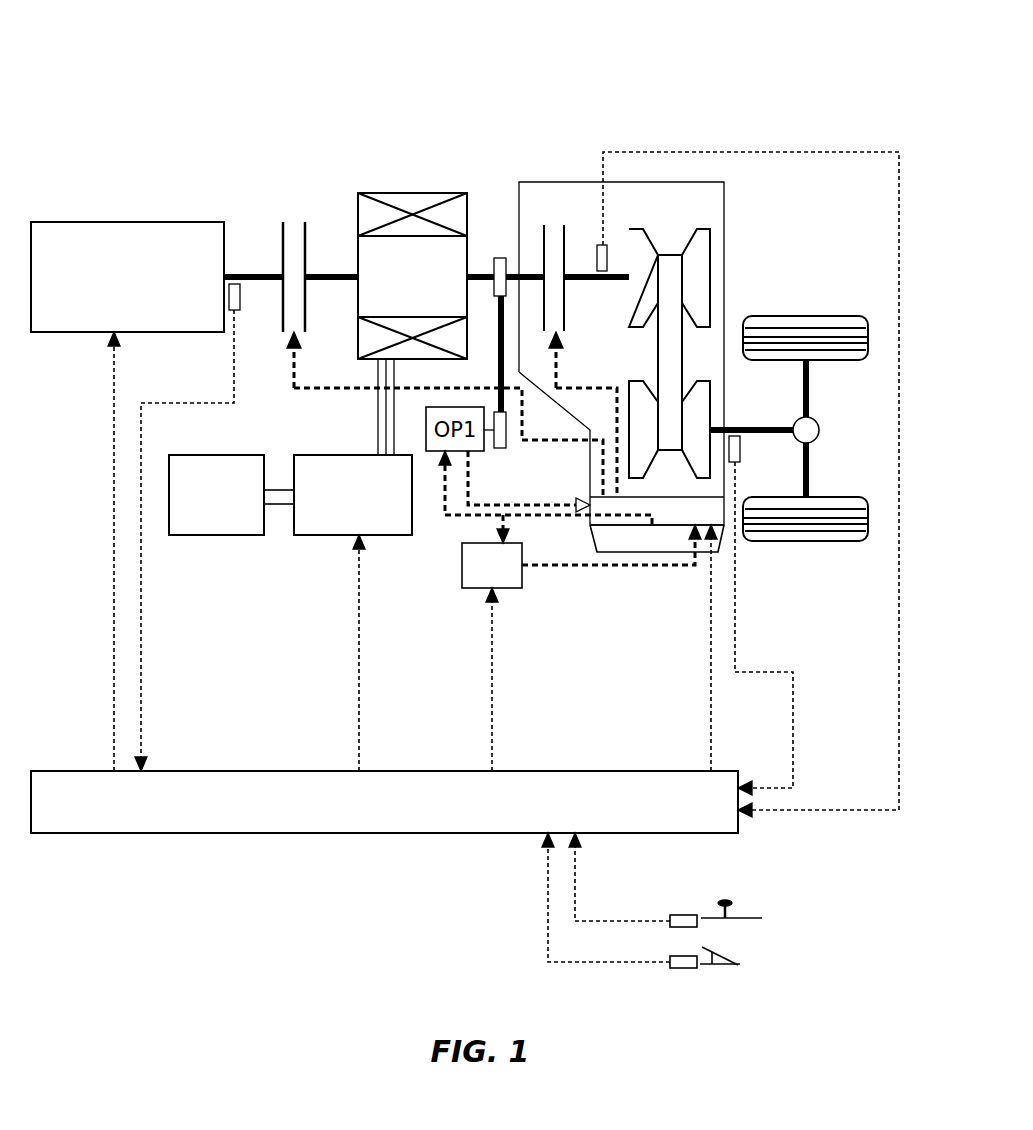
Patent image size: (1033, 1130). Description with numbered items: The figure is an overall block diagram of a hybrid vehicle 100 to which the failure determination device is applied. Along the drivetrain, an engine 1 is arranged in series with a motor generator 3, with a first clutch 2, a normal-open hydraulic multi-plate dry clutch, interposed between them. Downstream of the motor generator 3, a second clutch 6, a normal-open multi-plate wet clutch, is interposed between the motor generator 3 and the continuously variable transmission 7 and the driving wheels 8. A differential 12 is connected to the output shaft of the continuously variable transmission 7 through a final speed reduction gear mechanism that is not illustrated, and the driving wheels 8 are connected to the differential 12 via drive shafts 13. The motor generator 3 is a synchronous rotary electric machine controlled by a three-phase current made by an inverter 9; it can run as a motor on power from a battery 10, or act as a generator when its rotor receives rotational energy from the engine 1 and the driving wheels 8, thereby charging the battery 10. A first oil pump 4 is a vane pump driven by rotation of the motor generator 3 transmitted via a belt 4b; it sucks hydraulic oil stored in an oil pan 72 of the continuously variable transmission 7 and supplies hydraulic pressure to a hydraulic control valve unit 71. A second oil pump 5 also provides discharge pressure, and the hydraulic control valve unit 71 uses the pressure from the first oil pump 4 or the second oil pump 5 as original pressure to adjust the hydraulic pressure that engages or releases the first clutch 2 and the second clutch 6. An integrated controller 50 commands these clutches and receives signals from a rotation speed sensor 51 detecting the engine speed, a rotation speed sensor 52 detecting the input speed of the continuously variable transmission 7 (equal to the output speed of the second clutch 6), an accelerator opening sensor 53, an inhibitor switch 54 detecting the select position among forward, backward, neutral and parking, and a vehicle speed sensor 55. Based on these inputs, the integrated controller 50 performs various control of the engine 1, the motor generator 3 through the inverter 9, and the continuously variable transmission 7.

The hybrid vehicle 100 is at (675, 71).
The engine 1 is at (165, 237).
The first clutch 2 is at (282, 228).
The motor generator 3 is at (413, 199).
The first oil pump 4 is at (470, 445).
The belt 4b is at (501, 258).
The second oil pump 5 is at (472, 582).
The second clutch 6 is at (540, 234).
The continuously variable transmission 7 is at (700, 275).
The driving wheels 8 is at (810, 324).
The inverter 9 is at (321, 528).
The battery 10 is at (221, 528).
The differential 12 is at (819, 430).
The drive shafts 13 is at (809, 381).
The integrated controller 50 is at (376, 823).
The rotation speed sensor 51 is at (237, 308).
The rotation speed sensor 52 is at (603, 257).
The accelerator opening sensor 53 is at (686, 969).
The inhibitor switch 54 is at (682, 915).
The vehicle speed sensor 55 is at (741, 449).
The hydraulic control valve unit 71 is at (598, 508).
The oil pan 72 is at (620, 553).